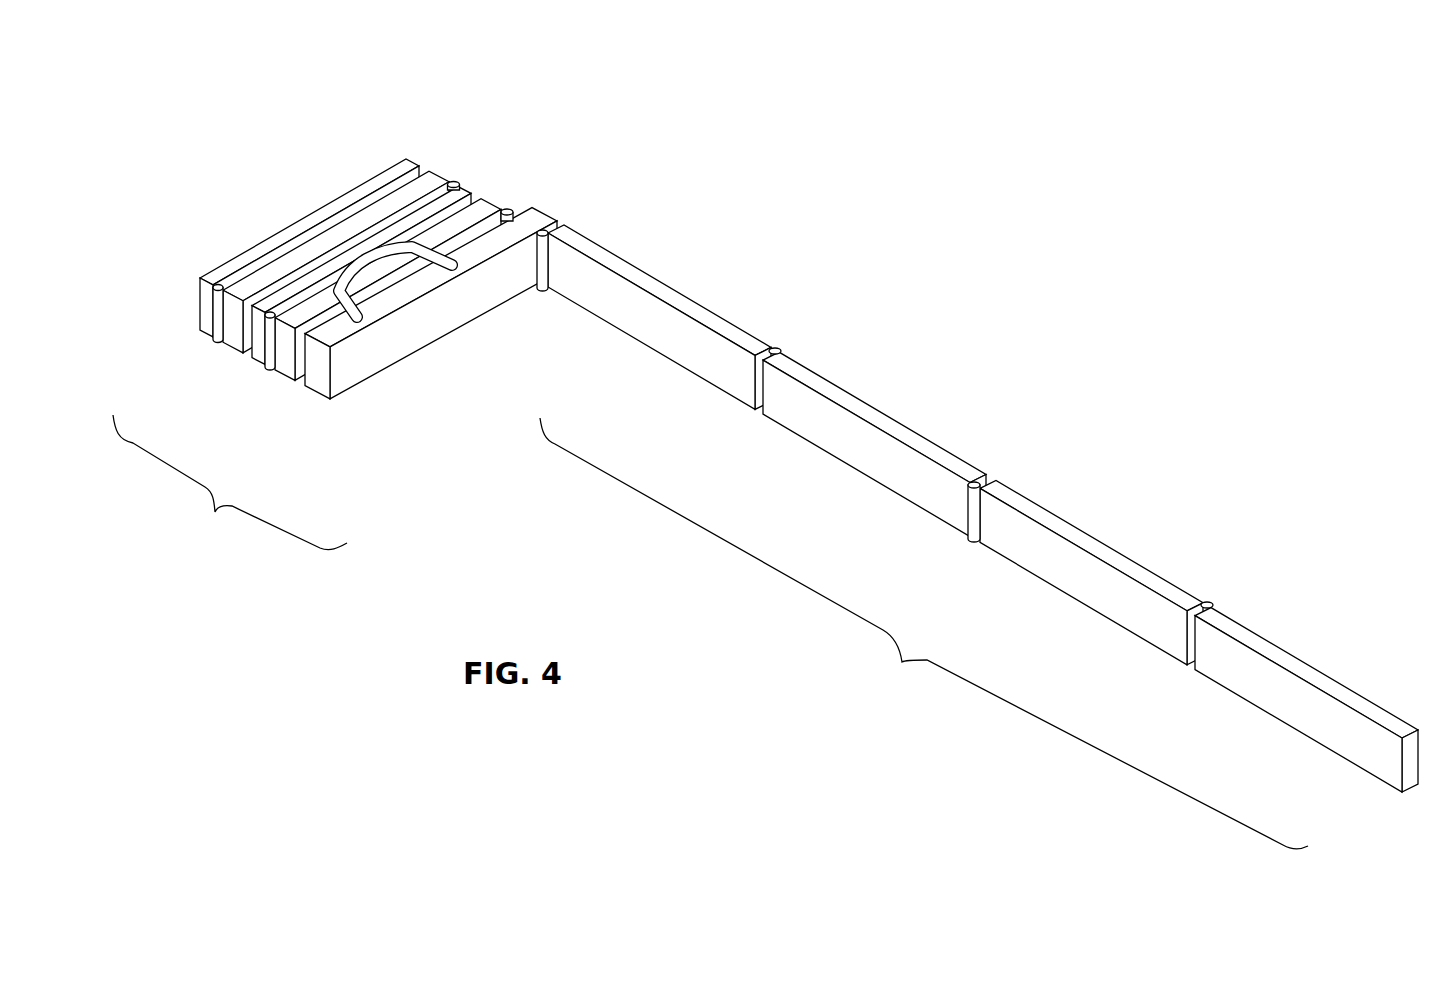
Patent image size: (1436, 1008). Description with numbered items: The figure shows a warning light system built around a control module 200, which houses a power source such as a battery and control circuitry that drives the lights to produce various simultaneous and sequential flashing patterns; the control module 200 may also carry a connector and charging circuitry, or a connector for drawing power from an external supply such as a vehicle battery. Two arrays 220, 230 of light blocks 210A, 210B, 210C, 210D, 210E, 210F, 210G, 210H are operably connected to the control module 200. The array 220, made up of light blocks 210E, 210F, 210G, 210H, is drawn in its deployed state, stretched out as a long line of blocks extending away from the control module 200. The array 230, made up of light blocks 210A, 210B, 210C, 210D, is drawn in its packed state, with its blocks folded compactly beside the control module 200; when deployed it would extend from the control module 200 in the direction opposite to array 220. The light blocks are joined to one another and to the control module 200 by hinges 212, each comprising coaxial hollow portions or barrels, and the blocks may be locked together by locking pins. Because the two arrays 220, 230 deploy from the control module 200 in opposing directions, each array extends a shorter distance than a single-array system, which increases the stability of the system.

The control module 200 is at (410, 352).
The light block 210A is at (212, 337).
The light block 210B is at (233, 348).
The light block 210C is at (258, 361).
The light block 210D is at (286, 374).
The light block 210E is at (648, 350).
The light block 210F is at (862, 478).
The light block 210G is at (1082, 606).
The light block 210H is at (1297, 730).
The hinge 212 is at (218, 284).
The array 220 is at (902, 662).
The array 230 is at (215, 512).